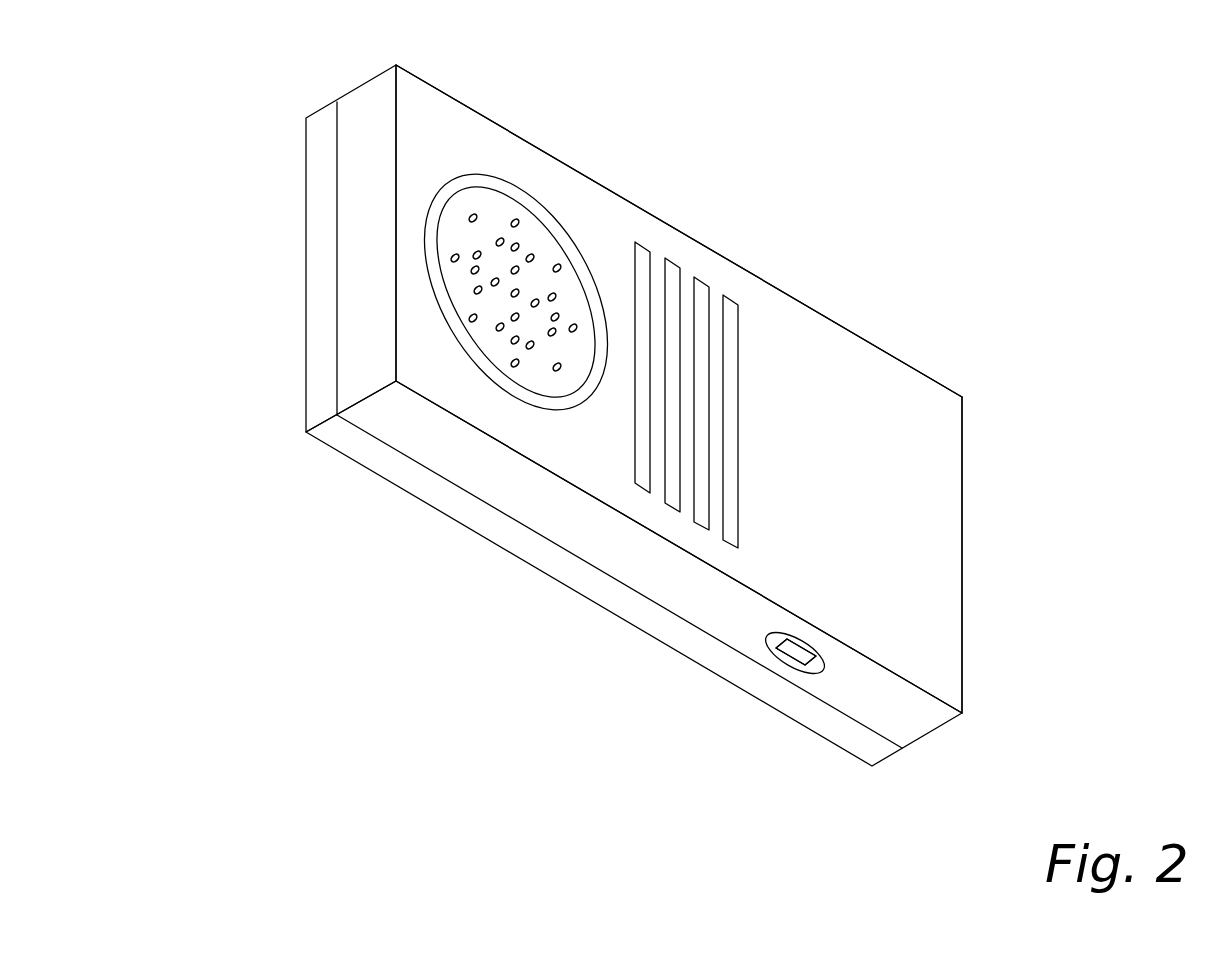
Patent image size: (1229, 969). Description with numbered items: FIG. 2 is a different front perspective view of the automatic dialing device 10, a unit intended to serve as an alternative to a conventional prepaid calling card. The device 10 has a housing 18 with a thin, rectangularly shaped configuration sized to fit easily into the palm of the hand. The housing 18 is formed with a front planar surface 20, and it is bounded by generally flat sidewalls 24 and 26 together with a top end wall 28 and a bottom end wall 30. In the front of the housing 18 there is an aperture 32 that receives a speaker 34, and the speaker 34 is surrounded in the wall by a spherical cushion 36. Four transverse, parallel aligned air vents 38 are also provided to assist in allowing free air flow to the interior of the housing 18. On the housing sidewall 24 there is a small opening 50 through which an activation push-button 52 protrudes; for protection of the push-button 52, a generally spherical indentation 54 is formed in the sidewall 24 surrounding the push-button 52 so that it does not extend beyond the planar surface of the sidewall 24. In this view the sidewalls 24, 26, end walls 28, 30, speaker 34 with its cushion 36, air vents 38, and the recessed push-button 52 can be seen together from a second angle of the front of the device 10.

The automatic dialing device 10 is at (432, 577).
The housing 18 is at (828, 388).
The front planar surface 20 is at (927, 563).
The sidewall 24 is at (610, 543).
The sidewall 26 is at (632, 200).
The top end wall 28 is at (358, 230).
The bottom end wall 30 is at (963, 633).
The aperture 32 is at (472, 175).
The speaker 34 is at (503, 197).
The spherical cushion 36 is at (535, 207).
The air vents 38 is at (645, 240).
The small opening 50 is at (797, 656).
The activation push-button 52 is at (792, 652).
The spherical indentation 54 is at (770, 640).